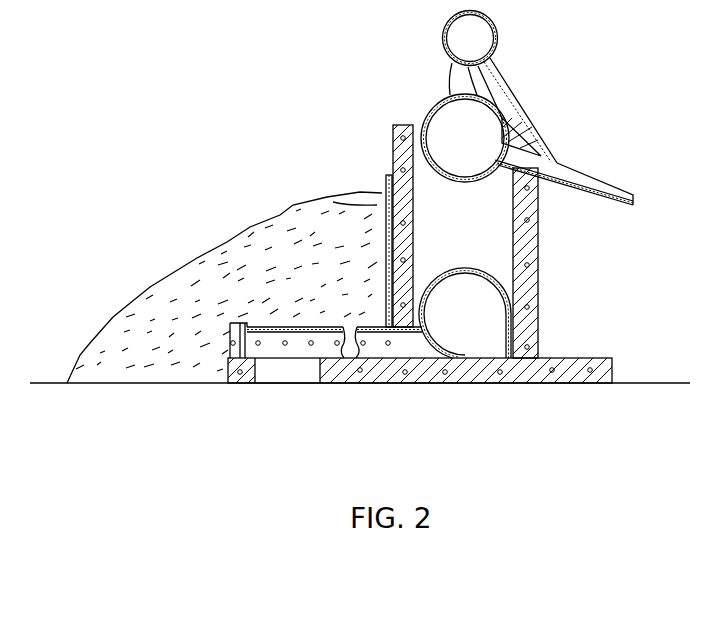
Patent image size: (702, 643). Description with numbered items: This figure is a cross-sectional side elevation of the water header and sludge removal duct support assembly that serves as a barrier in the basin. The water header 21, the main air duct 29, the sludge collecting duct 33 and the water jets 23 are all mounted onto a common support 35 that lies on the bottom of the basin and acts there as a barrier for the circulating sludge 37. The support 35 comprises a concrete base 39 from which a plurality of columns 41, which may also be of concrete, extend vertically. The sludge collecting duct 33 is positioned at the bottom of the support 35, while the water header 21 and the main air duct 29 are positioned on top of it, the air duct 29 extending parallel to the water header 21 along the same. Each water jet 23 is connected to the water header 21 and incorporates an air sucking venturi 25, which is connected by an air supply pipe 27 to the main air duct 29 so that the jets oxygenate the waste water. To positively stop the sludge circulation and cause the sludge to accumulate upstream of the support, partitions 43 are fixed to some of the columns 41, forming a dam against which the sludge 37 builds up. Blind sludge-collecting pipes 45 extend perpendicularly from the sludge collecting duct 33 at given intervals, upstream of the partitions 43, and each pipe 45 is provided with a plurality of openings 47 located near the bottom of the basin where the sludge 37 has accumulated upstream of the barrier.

The water header 21 is at (465, 160).
The water jet 23 is at (618, 197).
The air sucking venturi 25 is at (558, 183).
The air supply pipe 27 is at (521, 116).
The main air duct 29 is at (483, 33).
The sludge collecting duct 33 is at (470, 342).
The common support 35 is at (545, 313).
The sludge 37 is at (187, 282).
The concrete base 39 is at (593, 364).
The columns 41 is at (513, 250).
The partitions 43 is at (387, 230).
The blind sludge-collecting pipes 45 is at (327, 353).
The openings 47 is at (311, 347).